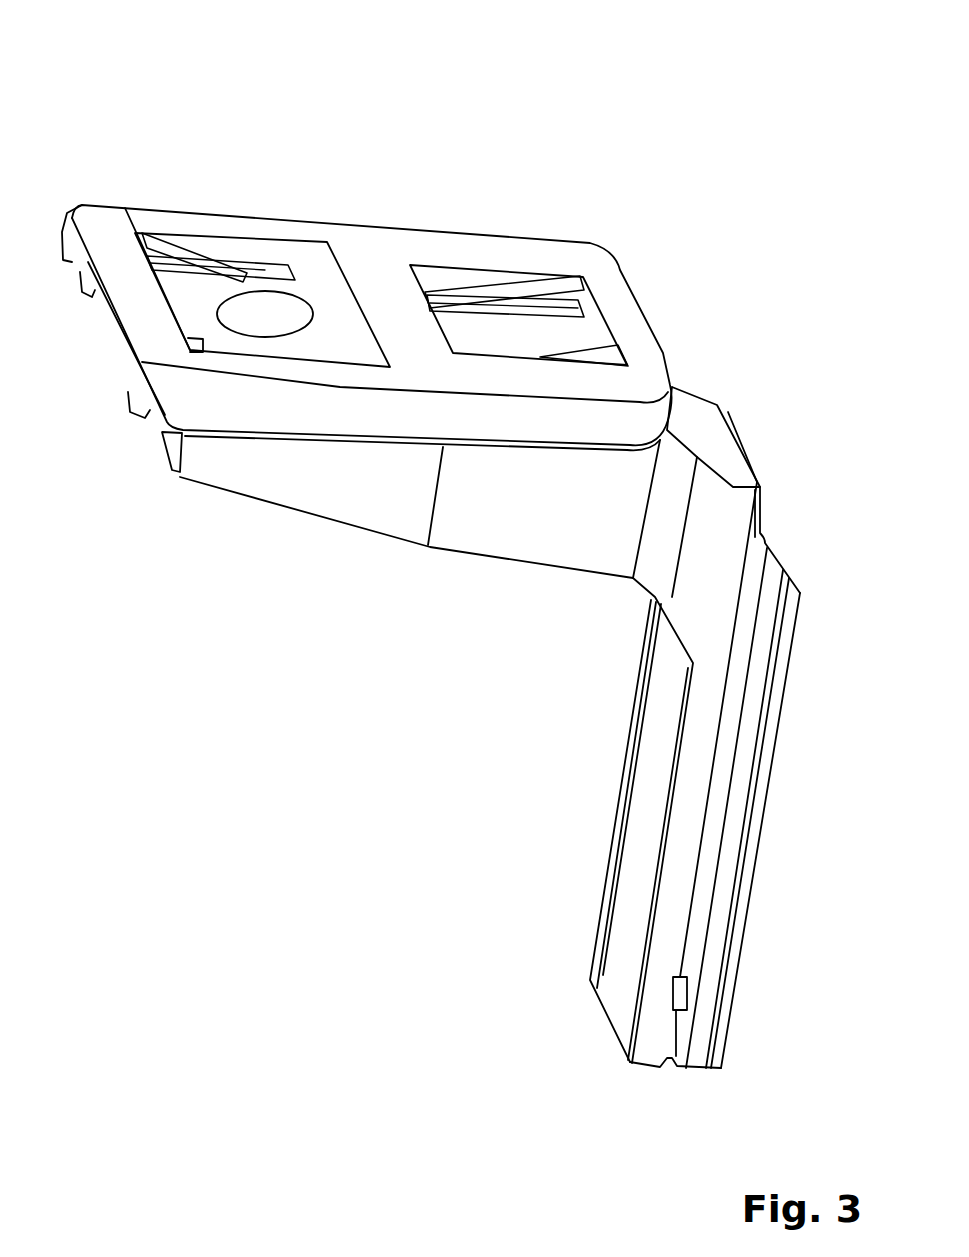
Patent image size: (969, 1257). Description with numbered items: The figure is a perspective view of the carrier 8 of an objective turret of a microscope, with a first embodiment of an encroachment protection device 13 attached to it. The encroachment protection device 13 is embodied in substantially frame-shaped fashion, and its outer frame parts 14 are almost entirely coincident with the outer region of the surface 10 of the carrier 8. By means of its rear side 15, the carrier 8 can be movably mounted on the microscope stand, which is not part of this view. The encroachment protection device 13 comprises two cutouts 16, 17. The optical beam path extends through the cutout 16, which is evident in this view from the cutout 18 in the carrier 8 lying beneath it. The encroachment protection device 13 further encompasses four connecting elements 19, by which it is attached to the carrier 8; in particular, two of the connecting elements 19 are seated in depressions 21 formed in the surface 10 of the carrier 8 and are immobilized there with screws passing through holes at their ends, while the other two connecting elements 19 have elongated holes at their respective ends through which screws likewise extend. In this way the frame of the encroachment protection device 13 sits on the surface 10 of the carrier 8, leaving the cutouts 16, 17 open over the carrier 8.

The carrier 8 is at (560, 527).
The surface 10 is at (280, 309).
The encroachment protection device 13 is at (160, 152).
The outer frame parts 14 is at (133, 268).
The rear side 15 is at (765, 807).
The cutout 16 is at (233, 246).
The cutout 17 is at (515, 305).
The cutout 18 is at (276, 291).
The connecting elements 19 is at (182, 250).
The depressions 21 is at (277, 275).